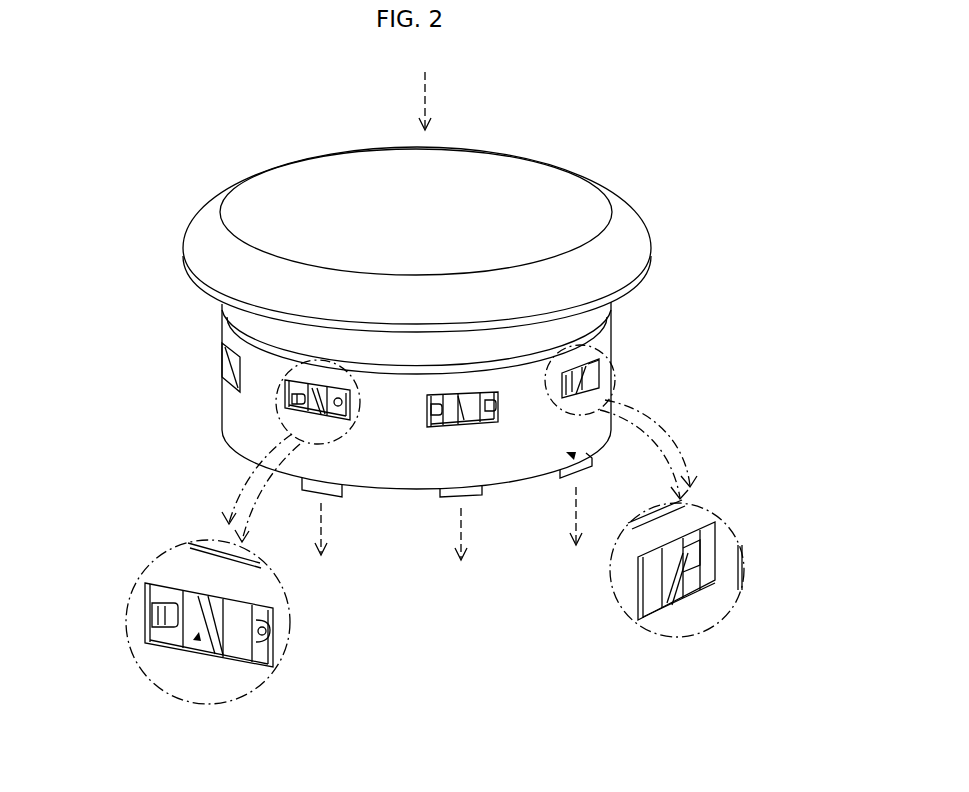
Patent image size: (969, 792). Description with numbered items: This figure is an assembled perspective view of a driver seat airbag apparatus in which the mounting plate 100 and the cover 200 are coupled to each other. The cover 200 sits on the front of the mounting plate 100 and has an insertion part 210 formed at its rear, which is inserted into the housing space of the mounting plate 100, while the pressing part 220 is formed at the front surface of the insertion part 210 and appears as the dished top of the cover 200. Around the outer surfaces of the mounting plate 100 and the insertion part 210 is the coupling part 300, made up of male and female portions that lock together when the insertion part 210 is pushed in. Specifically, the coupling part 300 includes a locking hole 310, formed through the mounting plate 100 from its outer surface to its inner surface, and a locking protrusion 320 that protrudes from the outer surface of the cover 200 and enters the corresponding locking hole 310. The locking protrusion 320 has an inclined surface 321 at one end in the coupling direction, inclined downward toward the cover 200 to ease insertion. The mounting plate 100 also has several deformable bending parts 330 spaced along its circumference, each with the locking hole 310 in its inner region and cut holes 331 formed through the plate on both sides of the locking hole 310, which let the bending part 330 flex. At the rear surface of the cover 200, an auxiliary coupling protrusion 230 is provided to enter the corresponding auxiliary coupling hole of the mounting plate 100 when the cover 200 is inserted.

The mounting plate 100 is at (590, 460).
The cover 200 is at (483, 158).
The insertion part 210 is at (585, 324).
The pressing part 220 is at (537, 183).
The auxiliary coupling protrusion 230 is at (305, 492).
The coupling part 300 is at (223, 437).
The locking hole 310 is at (313, 380).
The locking protrusion 320 is at (603, 372).
The inclined surface 321 is at (590, 414).
The bending part 330 is at (350, 423).
The cut hole 331 is at (291, 408).